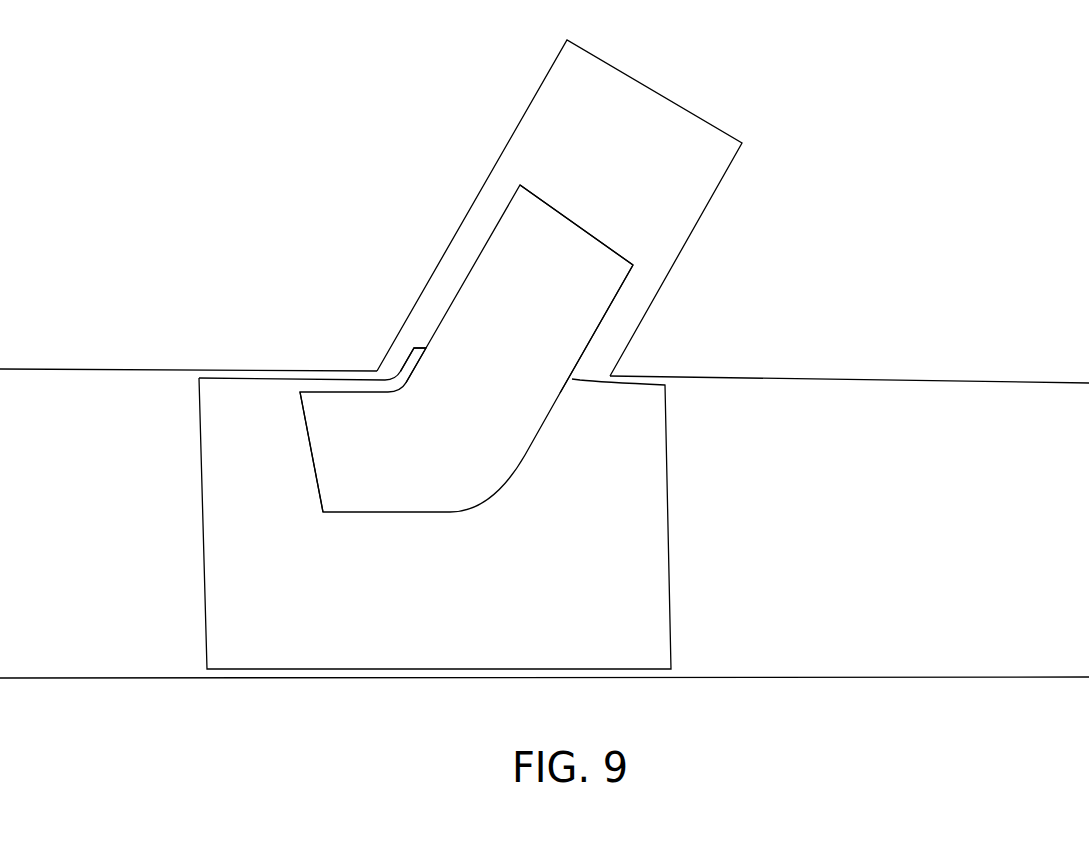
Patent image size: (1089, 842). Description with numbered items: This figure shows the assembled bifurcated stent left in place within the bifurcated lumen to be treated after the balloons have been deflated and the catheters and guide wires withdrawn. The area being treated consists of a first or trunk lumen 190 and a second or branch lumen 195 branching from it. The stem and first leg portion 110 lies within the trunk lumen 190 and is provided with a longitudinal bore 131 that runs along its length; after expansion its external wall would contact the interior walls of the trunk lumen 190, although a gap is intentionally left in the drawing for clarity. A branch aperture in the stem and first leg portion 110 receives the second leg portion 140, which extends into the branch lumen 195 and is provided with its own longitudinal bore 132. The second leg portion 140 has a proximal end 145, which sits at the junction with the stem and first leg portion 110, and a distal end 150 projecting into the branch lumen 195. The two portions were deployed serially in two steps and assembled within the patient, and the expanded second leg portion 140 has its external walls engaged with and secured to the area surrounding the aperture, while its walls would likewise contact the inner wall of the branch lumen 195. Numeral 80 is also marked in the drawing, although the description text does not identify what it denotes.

The gate dielectric step 80 is at (412, 352).
The stem and first leg portion 110 is at (543, 670).
The longitudinal bore 131 is at (640, 506).
The longitudinal bore 132 is at (523, 389).
The second leg portion 140 is at (617, 296).
The proximal end 145 is at (323, 513).
The distal end 150 is at (521, 184).
The trunk lumen 190 is at (988, 435).
The branch lumen 195 is at (698, 193).